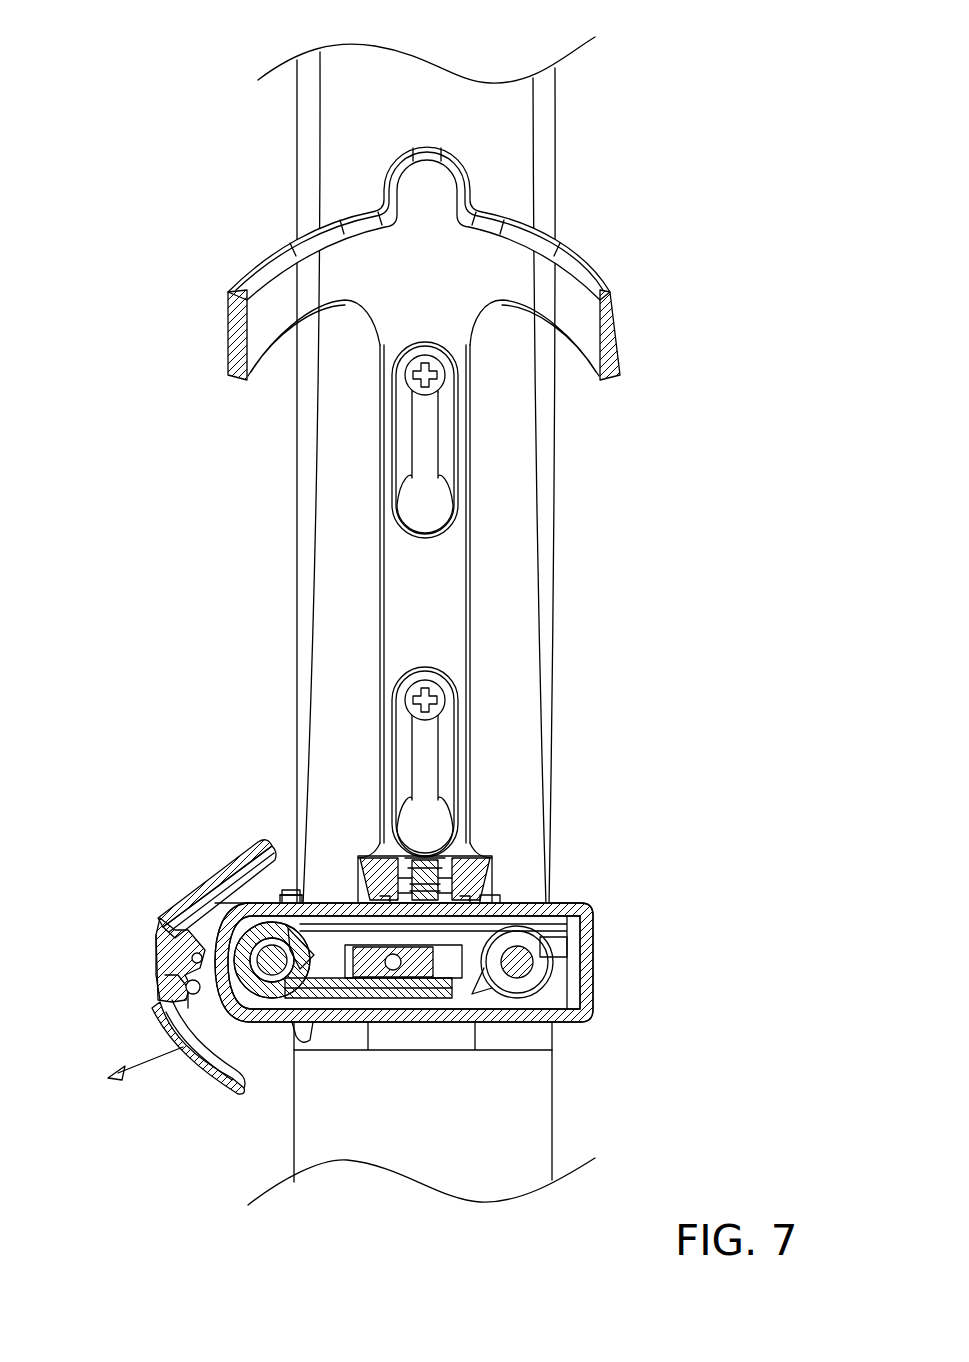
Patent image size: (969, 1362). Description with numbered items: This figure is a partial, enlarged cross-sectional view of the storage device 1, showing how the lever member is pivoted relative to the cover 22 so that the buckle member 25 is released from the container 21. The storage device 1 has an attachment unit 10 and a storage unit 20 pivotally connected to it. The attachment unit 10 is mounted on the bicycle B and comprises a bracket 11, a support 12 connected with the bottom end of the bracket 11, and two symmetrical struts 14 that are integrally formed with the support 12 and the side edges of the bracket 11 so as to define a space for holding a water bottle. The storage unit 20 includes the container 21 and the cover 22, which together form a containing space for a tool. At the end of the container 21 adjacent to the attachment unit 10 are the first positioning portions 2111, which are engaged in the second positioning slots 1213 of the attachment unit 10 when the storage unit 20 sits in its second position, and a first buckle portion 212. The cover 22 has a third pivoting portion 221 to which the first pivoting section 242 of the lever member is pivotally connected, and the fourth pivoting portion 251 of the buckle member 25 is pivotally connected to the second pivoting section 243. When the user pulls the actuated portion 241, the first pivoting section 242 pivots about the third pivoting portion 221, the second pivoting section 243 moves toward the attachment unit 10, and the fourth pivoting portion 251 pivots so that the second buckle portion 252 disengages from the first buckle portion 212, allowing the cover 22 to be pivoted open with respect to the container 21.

The storage device 1 is at (379, 621).
The attachment unit 10 is at (421, 493).
The struts 14 is at (265, 292).
The bicycle B is at (515, 478).
The bracket 11 is at (440, 572).
The support 12 is at (424, 807).
The first positioning portions 2111 is at (366, 858).
The second positioning slots 1213 is at (342, 892).
The storage unit 20 is at (379, 987).
The container 21 is at (602, 973).
The cover 22 is at (271, 1033).
The first buckle portion 212 is at (305, 895).
The buckle member 25 is at (150, 998).
The second buckle portion 252 is at (255, 848).
The actuated portion 241 is at (215, 1070).
The first pivoting section 242 is at (172, 958).
The second pivoting section 243 is at (175, 1000).
The third pivoting portion 221 is at (193, 955).
The fourth pivoting portion 251 is at (161, 986).